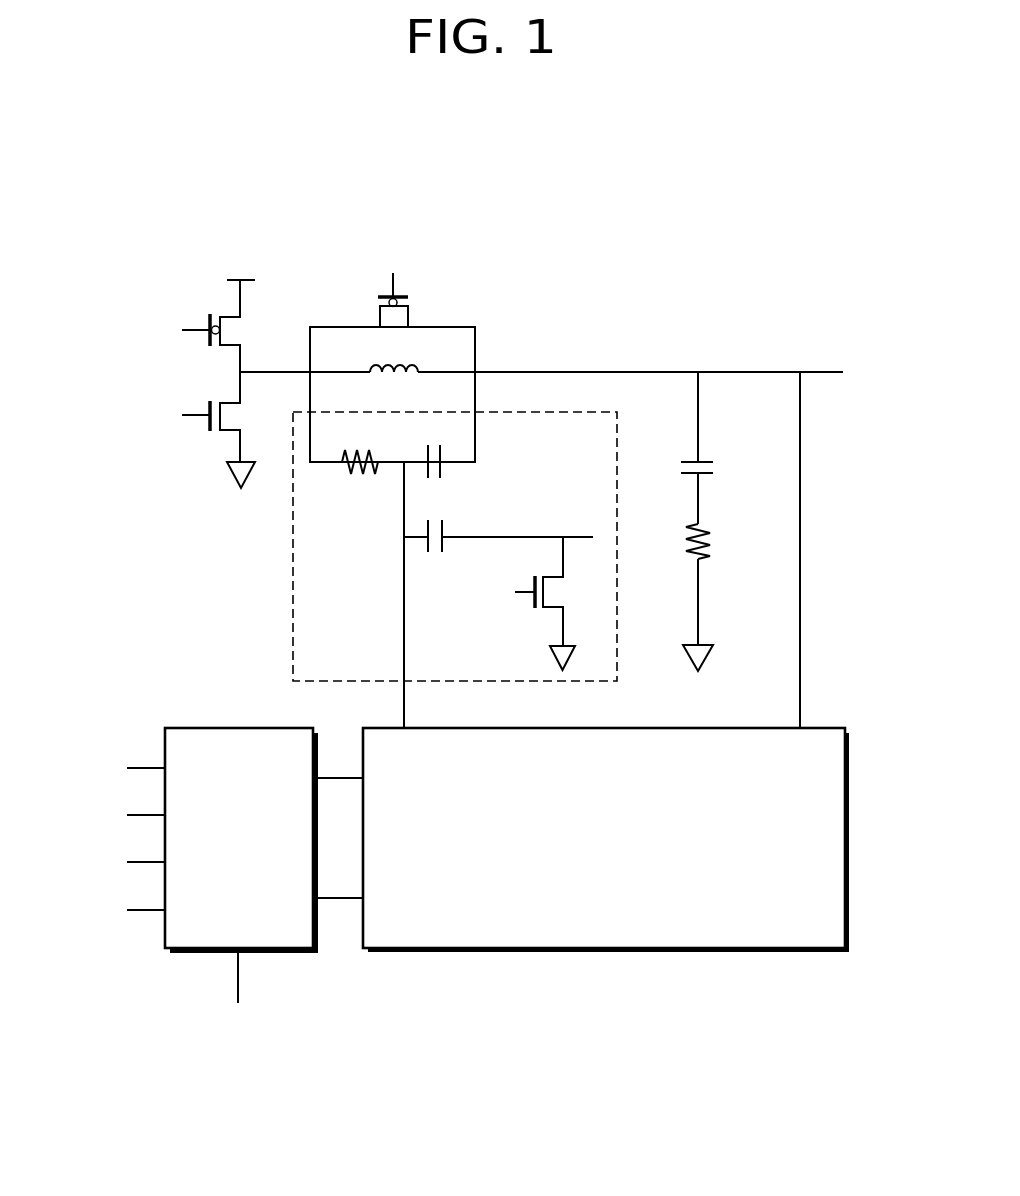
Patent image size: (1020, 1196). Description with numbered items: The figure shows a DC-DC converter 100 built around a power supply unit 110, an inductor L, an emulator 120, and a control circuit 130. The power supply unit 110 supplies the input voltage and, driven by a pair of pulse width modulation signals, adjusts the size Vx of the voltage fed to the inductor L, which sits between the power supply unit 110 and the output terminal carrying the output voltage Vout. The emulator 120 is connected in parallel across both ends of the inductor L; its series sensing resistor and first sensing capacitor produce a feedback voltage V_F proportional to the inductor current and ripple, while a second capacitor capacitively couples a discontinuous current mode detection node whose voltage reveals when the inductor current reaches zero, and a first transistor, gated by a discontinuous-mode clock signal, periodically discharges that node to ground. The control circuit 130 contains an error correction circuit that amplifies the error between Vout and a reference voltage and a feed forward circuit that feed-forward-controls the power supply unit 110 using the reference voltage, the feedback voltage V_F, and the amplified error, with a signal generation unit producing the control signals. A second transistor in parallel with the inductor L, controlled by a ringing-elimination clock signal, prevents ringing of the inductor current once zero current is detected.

The DC-DC converter 100 is at (679, 238).
The power supply unit 110 is at (257, 303).
The emulator 120 is at (292, 577).
The control circuit 130 is at (858, 728).